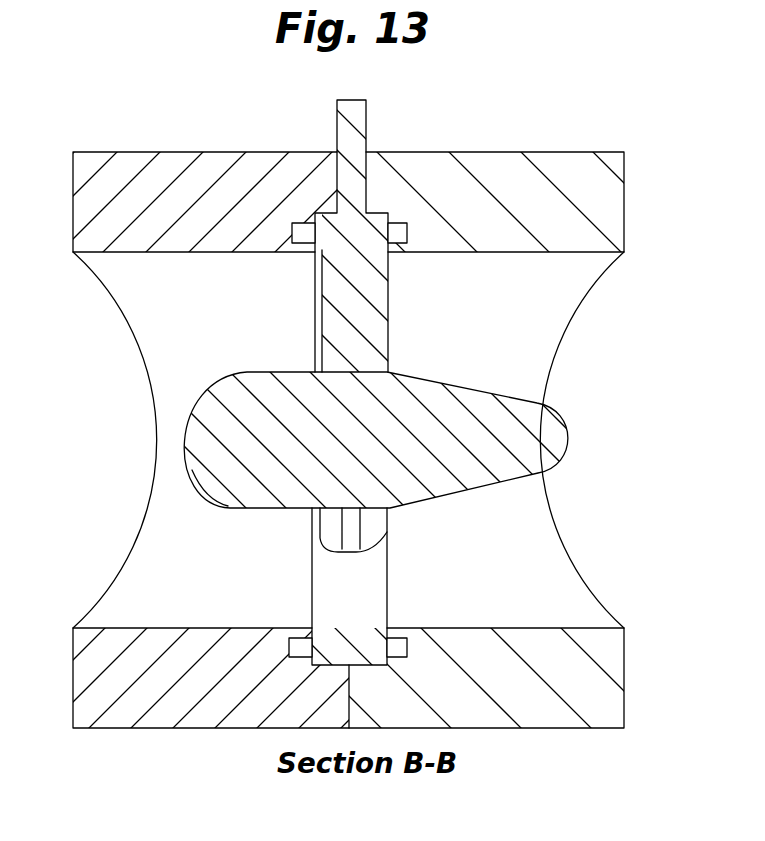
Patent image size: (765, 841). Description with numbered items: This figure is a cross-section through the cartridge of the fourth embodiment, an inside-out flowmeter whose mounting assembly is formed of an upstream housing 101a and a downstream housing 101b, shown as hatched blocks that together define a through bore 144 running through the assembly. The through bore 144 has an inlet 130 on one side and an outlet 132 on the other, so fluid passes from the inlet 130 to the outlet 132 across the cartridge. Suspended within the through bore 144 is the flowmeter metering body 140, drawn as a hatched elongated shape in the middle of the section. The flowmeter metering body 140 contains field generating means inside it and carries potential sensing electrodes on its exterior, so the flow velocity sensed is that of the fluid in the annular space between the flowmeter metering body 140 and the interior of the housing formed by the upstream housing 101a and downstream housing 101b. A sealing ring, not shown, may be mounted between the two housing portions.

The upstream housing 101a is at (167, 163).
The downstream housing 101b is at (493, 163).
The inlet 130 is at (140, 459).
The outlet 132 is at (645, 459).
The flowmeter metering body 140 is at (193, 397).
The through bore 144 is at (455, 336).